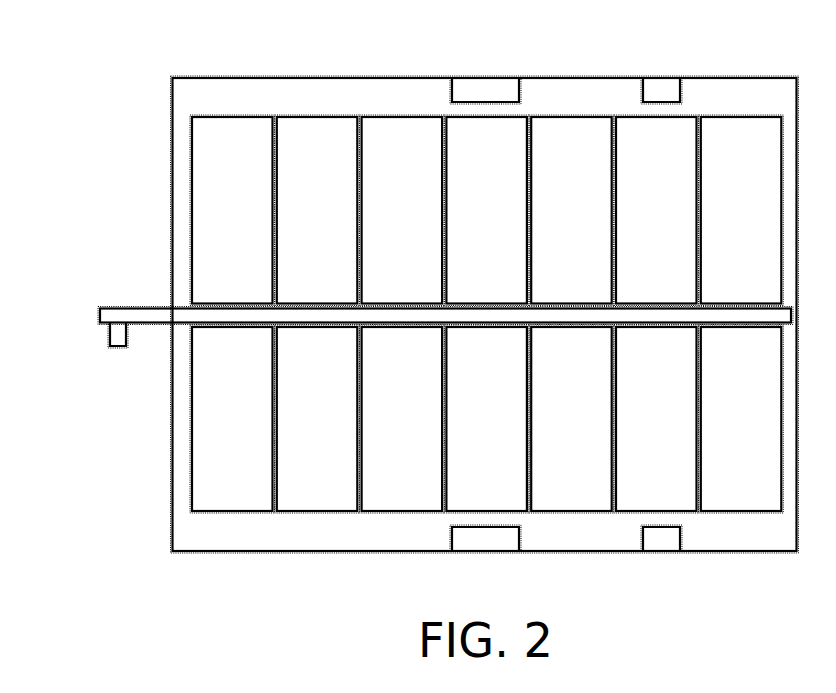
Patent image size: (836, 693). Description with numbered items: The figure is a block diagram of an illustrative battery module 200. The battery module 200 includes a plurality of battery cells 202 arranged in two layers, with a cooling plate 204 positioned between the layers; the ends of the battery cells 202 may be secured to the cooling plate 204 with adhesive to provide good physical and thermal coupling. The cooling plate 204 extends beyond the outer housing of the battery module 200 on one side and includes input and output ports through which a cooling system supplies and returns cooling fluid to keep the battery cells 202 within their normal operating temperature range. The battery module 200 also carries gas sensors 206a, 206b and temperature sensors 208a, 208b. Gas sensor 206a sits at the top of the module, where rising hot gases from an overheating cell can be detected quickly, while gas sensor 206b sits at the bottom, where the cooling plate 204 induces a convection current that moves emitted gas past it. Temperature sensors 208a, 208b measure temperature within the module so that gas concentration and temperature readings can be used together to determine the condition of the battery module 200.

The battery module 200 is at (228, 46).
The battery cells 202 is at (205, 117).
The cooling plate 204 is at (145, 308).
The gas sensor 206a is at (505, 92).
The gas sensor 206b is at (505, 537).
The temperature sensor 208a is at (665, 90).
The temperature sensor 208b is at (660, 539).